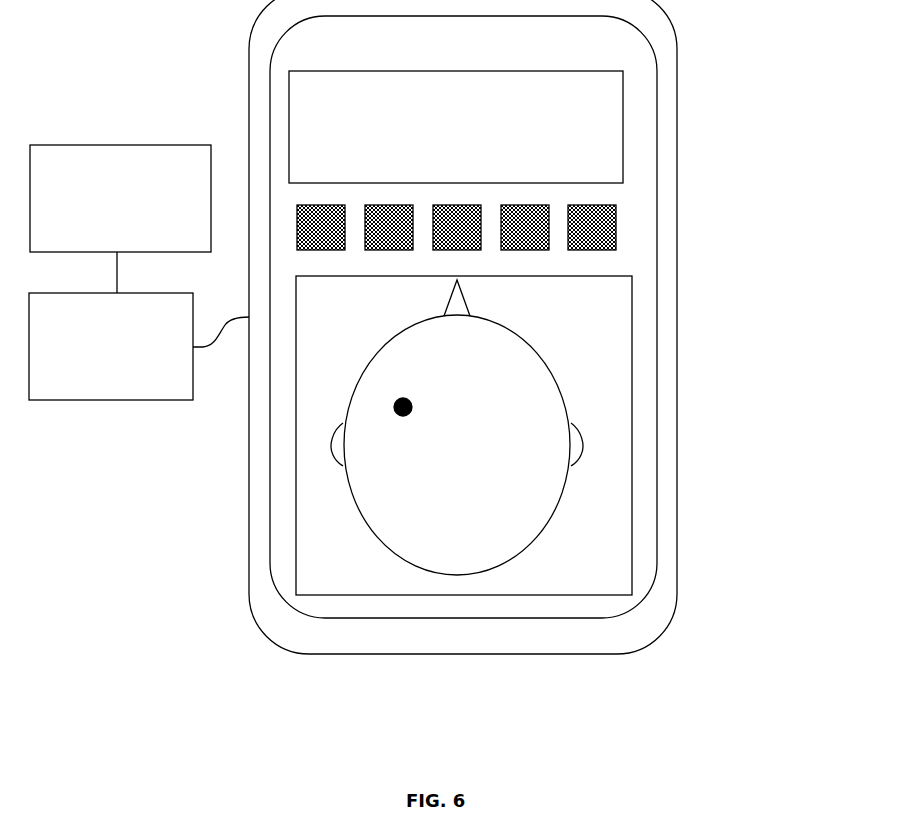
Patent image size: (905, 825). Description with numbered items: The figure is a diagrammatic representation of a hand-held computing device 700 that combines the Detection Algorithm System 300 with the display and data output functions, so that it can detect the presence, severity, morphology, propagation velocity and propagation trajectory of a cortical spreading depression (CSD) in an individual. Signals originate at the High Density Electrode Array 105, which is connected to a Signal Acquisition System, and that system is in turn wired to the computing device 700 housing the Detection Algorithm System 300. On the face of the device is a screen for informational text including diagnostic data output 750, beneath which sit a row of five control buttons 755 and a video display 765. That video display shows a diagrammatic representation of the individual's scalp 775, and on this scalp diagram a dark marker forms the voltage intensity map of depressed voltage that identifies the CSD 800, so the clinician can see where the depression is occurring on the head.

The High Density Electrode Array 105 is at (172, 143).
The Detection Algorithm System 300 is at (146, 403).
The computing device 700 is at (677, 116).
The screen for informational text 750 is at (625, 143).
The buttons 755 is at (621, 229).
The head image display area 765 is at (634, 413).
The diagrammatic representation of the individual's scalp 775 is at (570, 480).
The voltage intensity map of depressed voltage 800 is at (409, 420).